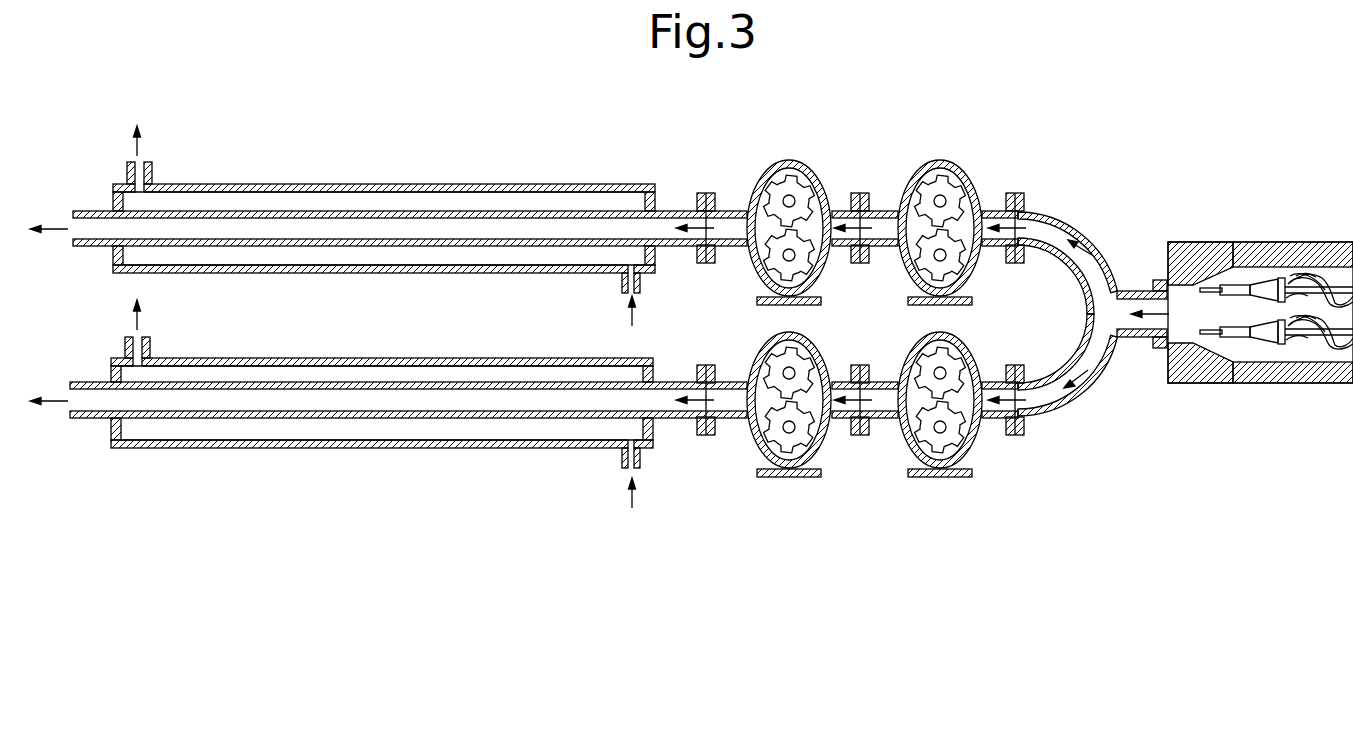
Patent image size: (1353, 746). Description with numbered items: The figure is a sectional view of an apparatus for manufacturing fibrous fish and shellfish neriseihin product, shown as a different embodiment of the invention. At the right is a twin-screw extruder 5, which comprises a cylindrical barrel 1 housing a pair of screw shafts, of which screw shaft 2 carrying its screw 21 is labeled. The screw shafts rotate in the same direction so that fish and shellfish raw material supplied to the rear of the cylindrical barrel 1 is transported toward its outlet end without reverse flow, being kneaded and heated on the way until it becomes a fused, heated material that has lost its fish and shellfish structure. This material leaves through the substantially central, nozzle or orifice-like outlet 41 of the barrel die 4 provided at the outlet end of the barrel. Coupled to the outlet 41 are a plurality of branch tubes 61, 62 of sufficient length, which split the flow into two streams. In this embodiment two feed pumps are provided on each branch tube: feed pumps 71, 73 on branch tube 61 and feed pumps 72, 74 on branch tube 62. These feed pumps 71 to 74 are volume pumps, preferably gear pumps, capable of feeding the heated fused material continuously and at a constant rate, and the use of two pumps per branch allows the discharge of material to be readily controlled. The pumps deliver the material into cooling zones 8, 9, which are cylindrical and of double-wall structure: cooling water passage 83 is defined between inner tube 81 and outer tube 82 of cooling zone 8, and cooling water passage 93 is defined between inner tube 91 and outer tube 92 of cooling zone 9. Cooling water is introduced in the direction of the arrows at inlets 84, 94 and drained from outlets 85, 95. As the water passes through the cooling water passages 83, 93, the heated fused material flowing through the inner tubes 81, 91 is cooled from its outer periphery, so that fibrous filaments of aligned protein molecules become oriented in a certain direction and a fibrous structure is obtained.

The cylindrical barrel 1 is at (1318, 245).
The screw shaft 2 is at (1295, 343).
The screw 21 is at (1333, 348).
The barrel die 4 is at (1200, 242).
The outlet 41 is at (1152, 282).
The twin-screw extruder 5 is at (1265, 242).
The branch tube 61 is at (1060, 240).
The branch tube 62 is at (1095, 360).
The feed pump 71 is at (973, 175).
The feed pump 72 is at (975, 440).
The feed pump 73 is at (818, 172).
The feed pump 74 is at (823, 440).
The cooling zone 8 is at (363, 221).
The inner tube 81 is at (360, 212).
The outer tube 82 is at (275, 185).
The cooling water passage 83 is at (530, 200).
The inlet 84 is at (621, 289).
The outlet 85 is at (135, 178).
The cooling zone 9 is at (384, 413).
The inner tube 91 is at (350, 420).
The outer tube 92 is at (278, 450).
The cooling water passage 93 is at (527, 432).
The inlet 94 is at (641, 463).
The outlet 95 is at (135, 349).